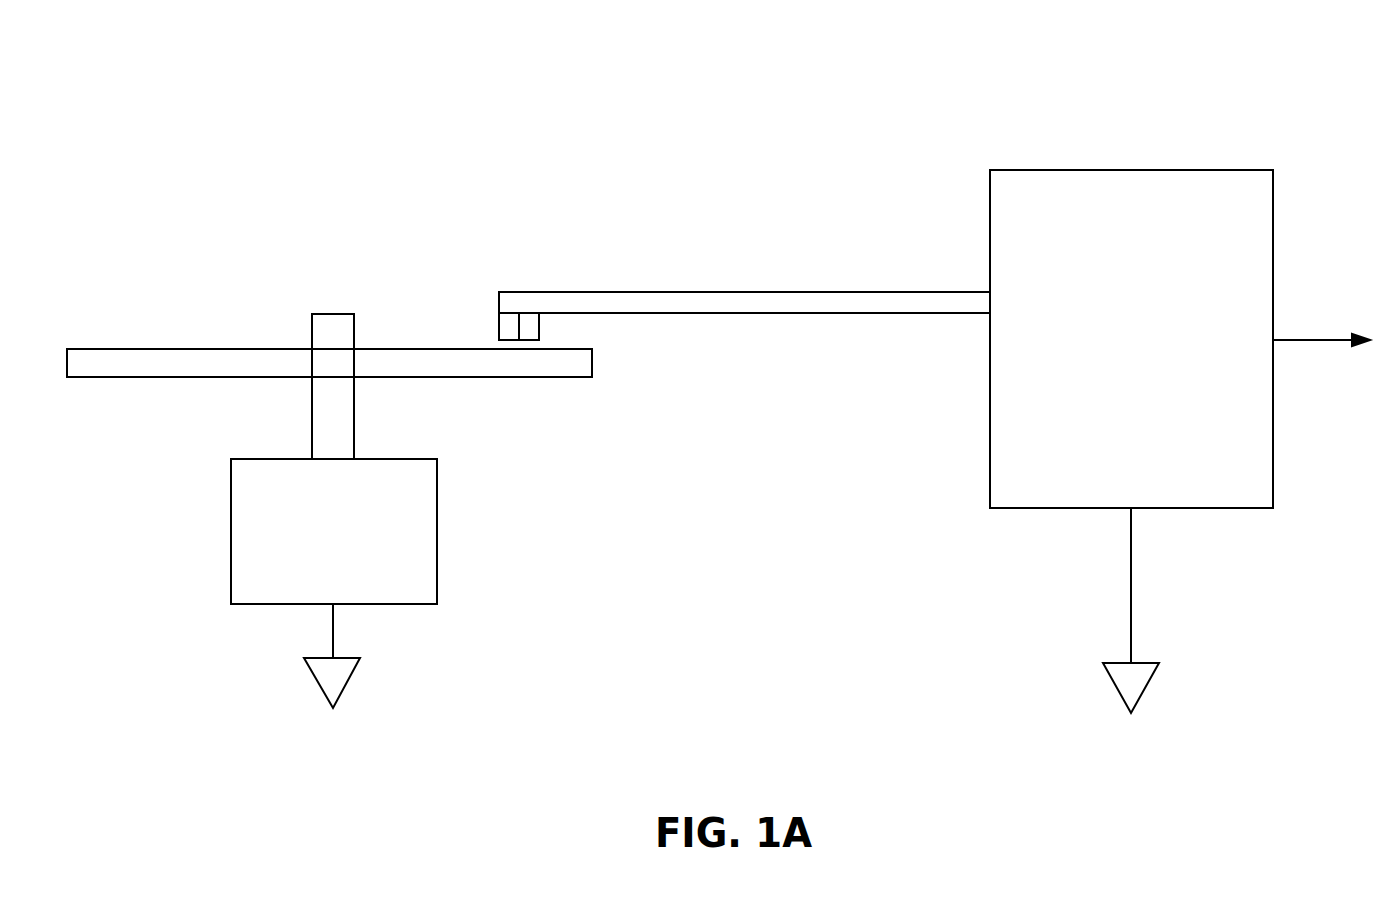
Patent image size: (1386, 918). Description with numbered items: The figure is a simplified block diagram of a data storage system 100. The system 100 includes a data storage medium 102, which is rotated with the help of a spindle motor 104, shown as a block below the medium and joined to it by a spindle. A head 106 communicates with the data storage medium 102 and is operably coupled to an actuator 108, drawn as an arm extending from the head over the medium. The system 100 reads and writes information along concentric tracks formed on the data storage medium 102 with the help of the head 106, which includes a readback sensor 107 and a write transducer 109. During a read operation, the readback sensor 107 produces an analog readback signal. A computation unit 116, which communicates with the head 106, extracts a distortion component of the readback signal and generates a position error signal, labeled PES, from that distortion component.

The data storage system 100 is at (772, 105).
The data storage medium 102 is at (138, 350).
The spindle motor 104 is at (311, 573).
The head 106 is at (510, 333).
The readback sensor 107 is at (500, 337).
The actuator 108 is at (748, 292).
The write transducer 109 is at (535, 325).
The computation unit 116 is at (1108, 383).